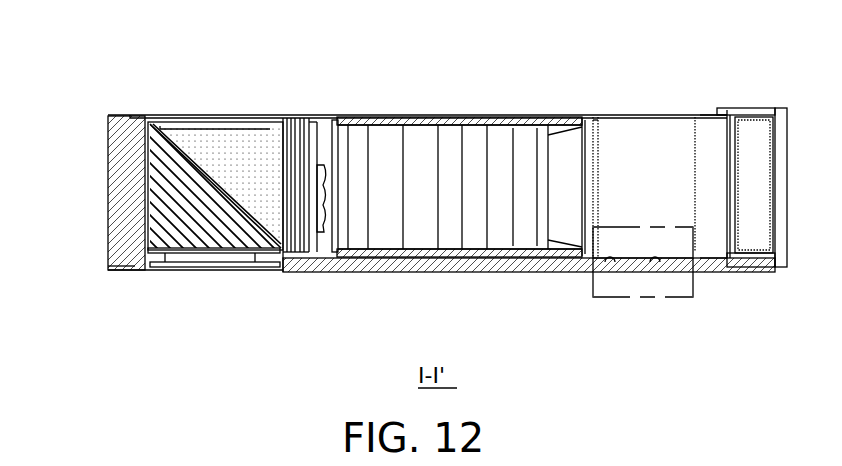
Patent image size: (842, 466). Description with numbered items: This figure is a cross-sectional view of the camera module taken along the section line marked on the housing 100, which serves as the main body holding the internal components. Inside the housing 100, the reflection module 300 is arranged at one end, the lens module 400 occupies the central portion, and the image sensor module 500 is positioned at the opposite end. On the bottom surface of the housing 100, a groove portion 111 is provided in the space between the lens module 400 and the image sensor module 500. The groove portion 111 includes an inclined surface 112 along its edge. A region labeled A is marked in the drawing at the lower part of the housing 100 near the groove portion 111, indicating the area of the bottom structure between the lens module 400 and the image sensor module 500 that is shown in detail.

The housing 100 is at (125, 203).
The reflection module 300 is at (227, 138).
The lens module 400 is at (445, 105).
The image sensor module 500 is at (750, 85).
The groove portion 111 is at (655, 263).
The inclined surface 112 is at (607, 263).
The region A is at (693, 287).